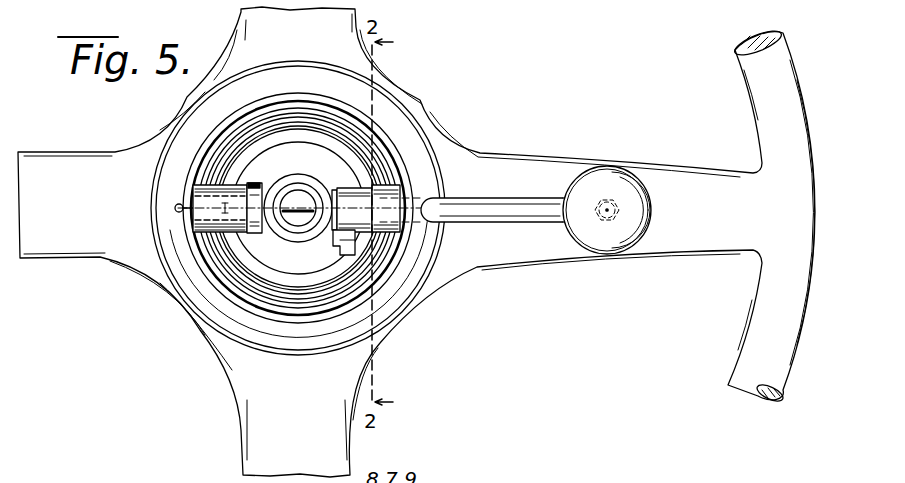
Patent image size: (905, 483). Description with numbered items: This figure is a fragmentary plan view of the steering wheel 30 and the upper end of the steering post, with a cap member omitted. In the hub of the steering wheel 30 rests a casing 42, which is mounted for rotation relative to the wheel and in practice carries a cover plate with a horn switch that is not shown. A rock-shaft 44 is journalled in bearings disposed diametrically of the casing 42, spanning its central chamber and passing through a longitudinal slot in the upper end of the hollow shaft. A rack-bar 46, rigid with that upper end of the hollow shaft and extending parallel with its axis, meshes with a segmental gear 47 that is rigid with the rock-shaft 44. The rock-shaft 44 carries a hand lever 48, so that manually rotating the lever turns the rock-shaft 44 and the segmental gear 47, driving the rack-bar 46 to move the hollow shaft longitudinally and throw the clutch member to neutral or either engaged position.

The steering wheel 30 is at (802, 332).
The casing 42 is at (402, 133).
The rock-shaft 44 is at (493, 202).
The rack-bar 46 is at (338, 243).
The segmental gear 47 is at (338, 186).
The hand lever 48 is at (651, 230).